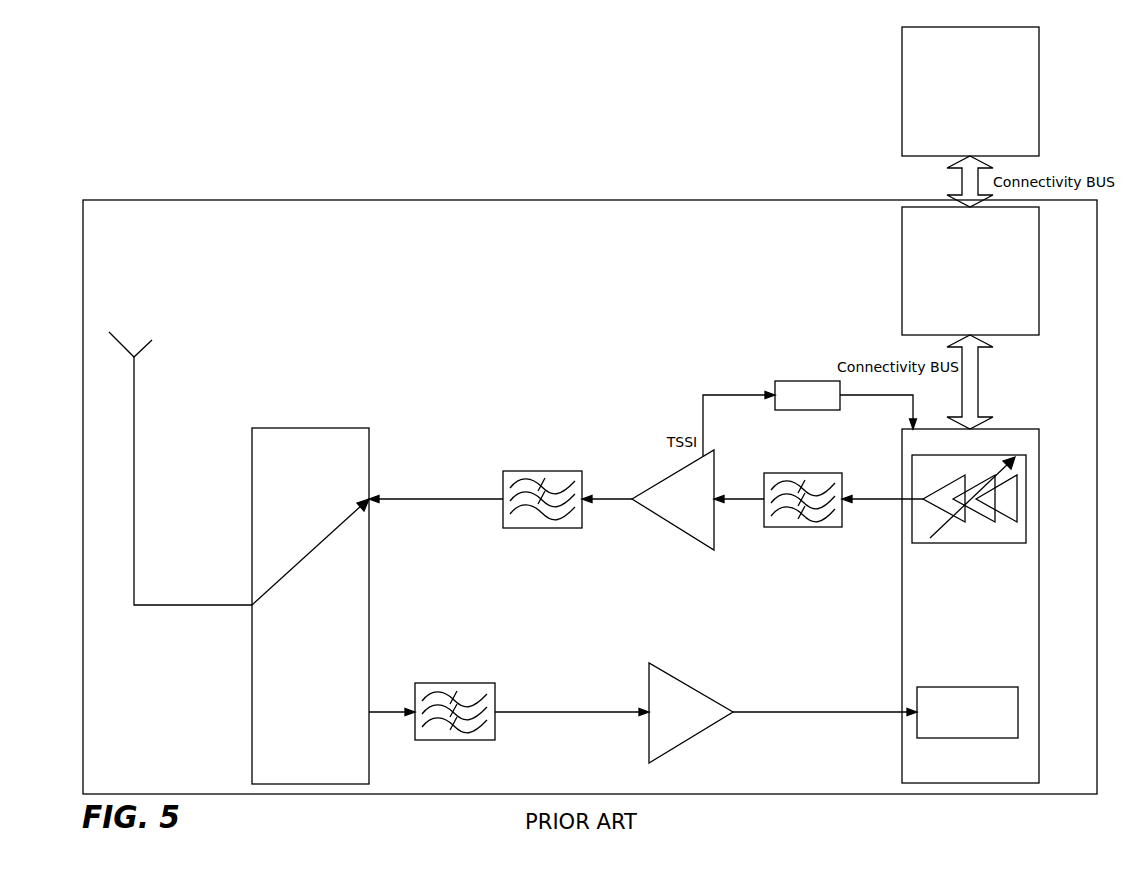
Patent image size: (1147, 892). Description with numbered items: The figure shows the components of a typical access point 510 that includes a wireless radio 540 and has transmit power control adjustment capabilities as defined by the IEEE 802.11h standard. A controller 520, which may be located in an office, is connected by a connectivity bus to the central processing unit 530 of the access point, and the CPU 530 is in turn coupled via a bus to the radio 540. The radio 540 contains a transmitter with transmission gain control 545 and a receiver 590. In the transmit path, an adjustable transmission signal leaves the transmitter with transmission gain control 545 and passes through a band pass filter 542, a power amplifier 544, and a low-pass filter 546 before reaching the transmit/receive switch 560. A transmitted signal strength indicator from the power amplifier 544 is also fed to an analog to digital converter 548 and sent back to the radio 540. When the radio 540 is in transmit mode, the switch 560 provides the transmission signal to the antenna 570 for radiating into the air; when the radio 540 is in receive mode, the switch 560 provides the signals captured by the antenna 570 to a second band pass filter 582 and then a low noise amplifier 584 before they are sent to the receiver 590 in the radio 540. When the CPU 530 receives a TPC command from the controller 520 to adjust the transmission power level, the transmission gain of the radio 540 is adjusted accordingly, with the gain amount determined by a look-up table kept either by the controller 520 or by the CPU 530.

The access point 510 is at (243, 202).
The controller 520 is at (1041, 63).
The central processing unit (CPU) 530 is at (900, 293).
The radio 540 is at (900, 614).
The band pass filter 542 is at (775, 527).
The power amplifier 544 is at (700, 543).
The transmitter with transmission gain control 545 is at (1026, 512).
The low-pass filter (LPF) 546 is at (515, 528).
The analog to digital converter (ADC) 548 is at (797, 380).
The transmit/receive switch 560 is at (369, 460).
The antenna 570 is at (152, 340).
The band pass filter 582 is at (473, 740).
The low noise amplifier (LNA) 584 is at (683, 738).
The receiver 590 is at (947, 738).